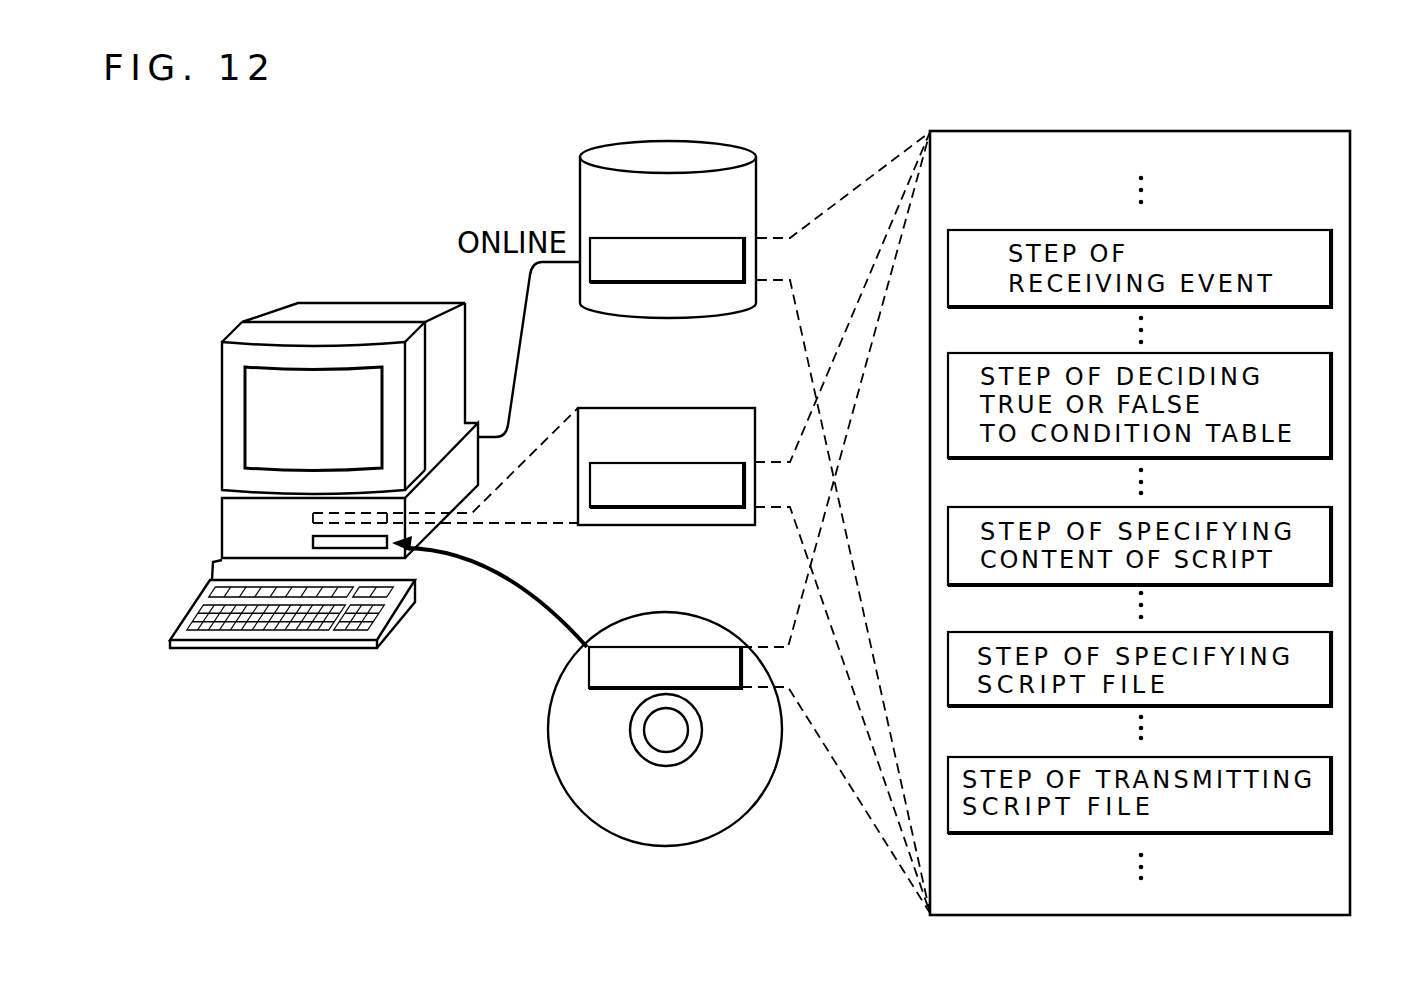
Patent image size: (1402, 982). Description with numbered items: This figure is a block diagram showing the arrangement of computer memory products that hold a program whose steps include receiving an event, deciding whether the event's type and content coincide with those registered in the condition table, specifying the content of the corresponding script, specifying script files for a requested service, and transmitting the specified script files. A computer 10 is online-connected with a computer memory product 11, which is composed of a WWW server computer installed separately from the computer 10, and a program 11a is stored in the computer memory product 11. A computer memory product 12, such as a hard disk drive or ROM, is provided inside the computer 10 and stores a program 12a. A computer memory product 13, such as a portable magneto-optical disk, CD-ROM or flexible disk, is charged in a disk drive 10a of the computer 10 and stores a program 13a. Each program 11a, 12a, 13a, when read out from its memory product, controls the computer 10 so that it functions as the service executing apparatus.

The computer 10 is at (357, 303).
The disk drive 10a is at (384, 549).
The computer memory product 11 is at (757, 182).
The program 11a is at (626, 238).
The computer memory product 12 is at (703, 408).
The program 12a is at (602, 463).
The computer memory product 13 is at (635, 612).
The program 13a is at (693, 647).